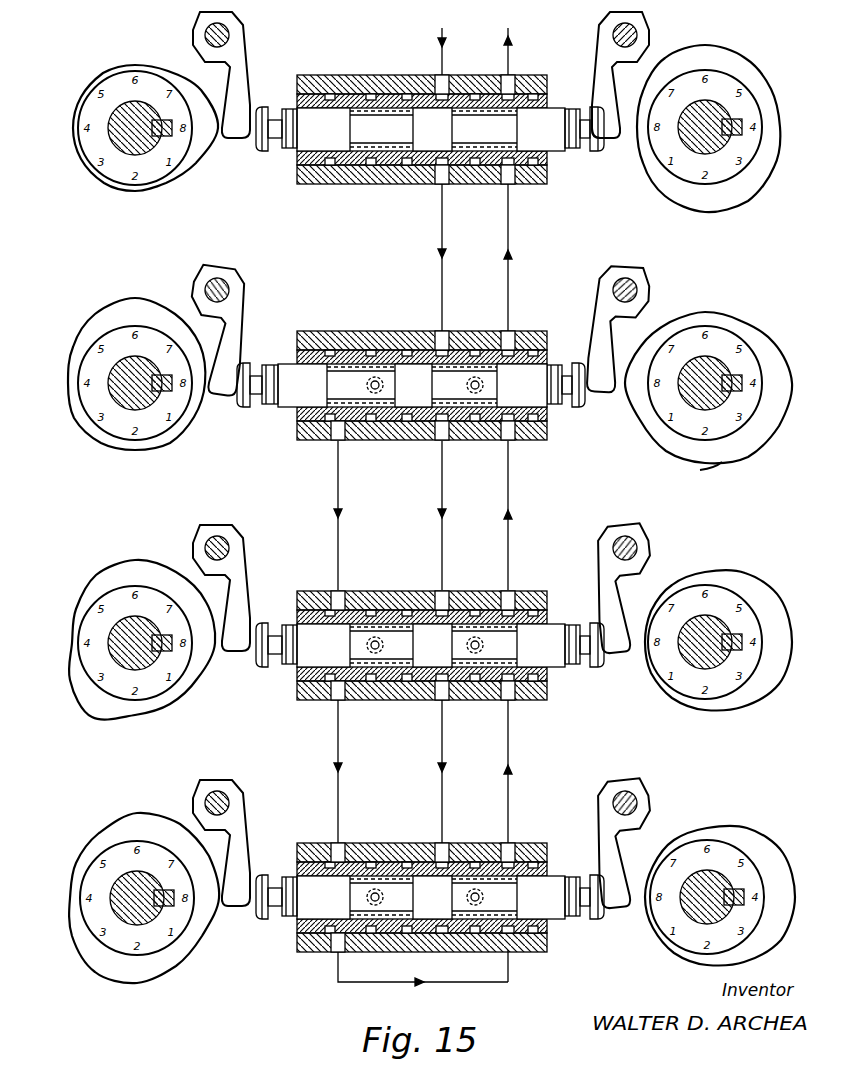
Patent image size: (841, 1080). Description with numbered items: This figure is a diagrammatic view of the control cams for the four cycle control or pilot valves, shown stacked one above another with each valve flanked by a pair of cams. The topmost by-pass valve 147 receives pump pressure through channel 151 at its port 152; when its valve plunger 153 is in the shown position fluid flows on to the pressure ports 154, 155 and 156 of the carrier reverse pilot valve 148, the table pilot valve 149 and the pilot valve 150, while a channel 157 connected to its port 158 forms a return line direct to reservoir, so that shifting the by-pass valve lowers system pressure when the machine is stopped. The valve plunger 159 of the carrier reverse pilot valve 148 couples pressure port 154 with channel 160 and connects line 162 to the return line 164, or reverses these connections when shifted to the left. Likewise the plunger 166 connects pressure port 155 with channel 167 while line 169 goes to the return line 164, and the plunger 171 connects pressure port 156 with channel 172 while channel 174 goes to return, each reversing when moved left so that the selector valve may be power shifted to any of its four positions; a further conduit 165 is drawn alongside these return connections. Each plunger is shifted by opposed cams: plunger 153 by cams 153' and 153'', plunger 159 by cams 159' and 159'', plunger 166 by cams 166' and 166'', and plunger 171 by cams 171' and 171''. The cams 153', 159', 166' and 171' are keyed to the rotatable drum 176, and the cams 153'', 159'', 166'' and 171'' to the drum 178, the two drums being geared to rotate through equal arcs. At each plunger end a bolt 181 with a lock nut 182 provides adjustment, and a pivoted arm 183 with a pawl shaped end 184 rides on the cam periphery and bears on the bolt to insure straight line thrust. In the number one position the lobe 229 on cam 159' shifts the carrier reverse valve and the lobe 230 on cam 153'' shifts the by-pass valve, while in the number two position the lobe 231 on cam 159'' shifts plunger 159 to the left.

The by-pass valve 147 is at (297, 181).
The carrier reverse pilot valve 148 is at (297, 434).
The table pilot valve 149 is at (298, 693).
The pilot valve 150 is at (298, 944).
The channel 151 is at (440, 30).
The port 152 is at (440, 77).
The valve plunger 153 is at (431, 100).
The cam 153' is at (145, 114).
The cam 153'' is at (705, 101).
The pressure port 154 is at (415, 335).
The pressure port 155 is at (422, 600).
The pressure port 156 is at (424, 843).
The channel 157 is at (506, 28).
The port 158 is at (506, 77).
The valve plunger 159 is at (392, 355).
The cam 159' is at (134, 362).
The cam 159'' is at (708, 378).
The channel 160 is at (372, 377).
The return line 162 is at (476, 377).
The return line 164 is at (510, 283).
The by-pass conduit 165 is at (338, 546).
The plunger 166 is at (430, 617).
The cam 166' is at (142, 629).
The cam 166'' is at (718, 623).
The channel 167 is at (370, 637).
The line 169 is at (473, 637).
The plunger 171 is at (430, 869).
The cam 171' is at (144, 887).
The cam 171'' is at (720, 877).
The channel 172 is at (370, 889).
The channel 174 is at (473, 889).
The rotatable member or drum 176 is at (120, 146).
The rotatable member or drum 178 is at (712, 150).
The bolt 181 is at (261, 149).
The lock nut 182 is at (290, 151).
The pivoted arm 183 is at (600, 36).
The pawl shaped end 184 is at (632, 130).
The lobe 229 is at (180, 452).
The lobe 230 is at (645, 178).
The lobe 231 is at (722, 470).